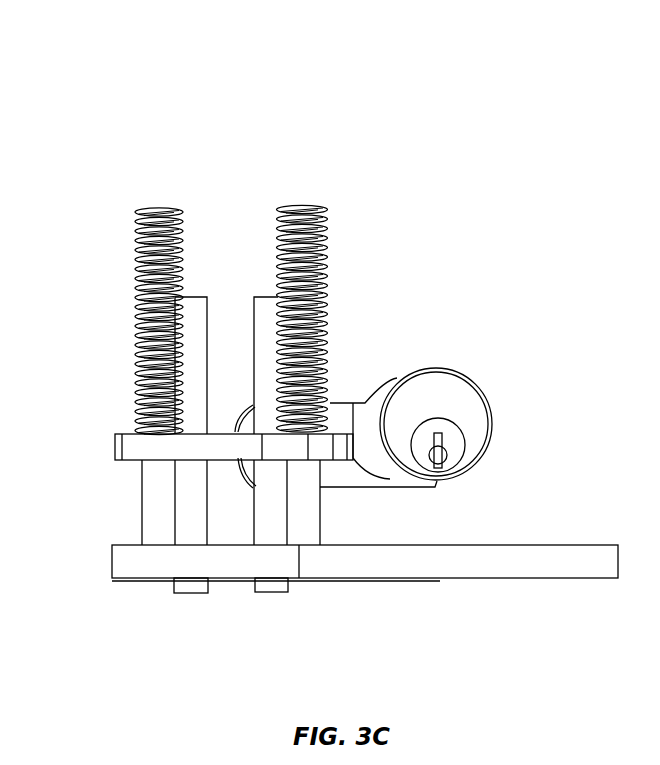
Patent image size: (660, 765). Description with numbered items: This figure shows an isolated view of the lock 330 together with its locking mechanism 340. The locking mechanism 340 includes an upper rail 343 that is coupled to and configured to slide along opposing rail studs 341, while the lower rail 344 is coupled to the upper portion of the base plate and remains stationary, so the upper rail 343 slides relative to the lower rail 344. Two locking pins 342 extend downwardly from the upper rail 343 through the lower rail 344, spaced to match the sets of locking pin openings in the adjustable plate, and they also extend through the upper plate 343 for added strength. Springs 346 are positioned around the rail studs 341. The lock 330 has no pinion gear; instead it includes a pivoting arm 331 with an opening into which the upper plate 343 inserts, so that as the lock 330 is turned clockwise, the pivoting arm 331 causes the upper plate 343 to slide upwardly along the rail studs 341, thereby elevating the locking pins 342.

The locking mechanism 340 is at (301, 92).
The springs 346 is at (173, 212).
The pivoting arm 331 is at (343, 405).
The lock 330 is at (473, 417).
The upper rail 343 is at (120, 435).
The rail studs 341 is at (313, 529).
The locking pins 342 is at (273, 590).
The lower rail 344 is at (393, 560).